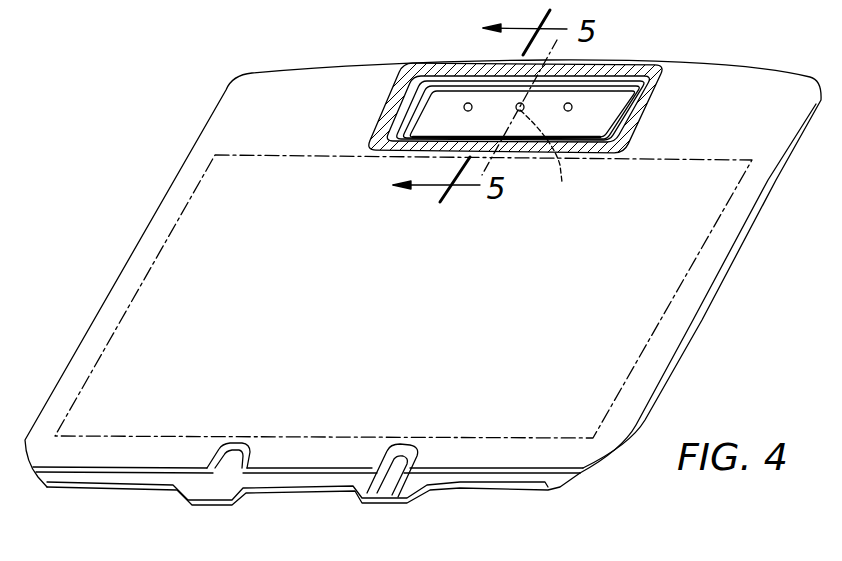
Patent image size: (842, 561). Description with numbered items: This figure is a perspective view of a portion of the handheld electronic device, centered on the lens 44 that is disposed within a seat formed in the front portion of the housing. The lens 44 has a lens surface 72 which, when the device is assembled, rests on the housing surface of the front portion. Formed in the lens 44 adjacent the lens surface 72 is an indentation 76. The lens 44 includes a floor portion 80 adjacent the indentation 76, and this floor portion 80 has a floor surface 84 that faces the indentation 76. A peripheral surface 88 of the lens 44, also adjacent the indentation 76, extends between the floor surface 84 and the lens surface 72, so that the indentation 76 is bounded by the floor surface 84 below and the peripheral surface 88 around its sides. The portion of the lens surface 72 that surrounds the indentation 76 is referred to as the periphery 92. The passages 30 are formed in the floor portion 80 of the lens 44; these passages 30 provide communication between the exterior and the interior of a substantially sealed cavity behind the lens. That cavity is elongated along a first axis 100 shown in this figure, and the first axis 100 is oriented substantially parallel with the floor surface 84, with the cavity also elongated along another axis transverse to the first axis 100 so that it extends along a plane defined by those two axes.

The passages 30 is at (517, 106).
The lens 44 is at (717, 65).
The lens surface 72 is at (779, 87).
The indentation 76 is at (567, 82).
The floor portion 80 is at (442, 90).
The floor surface 84 is at (425, 118).
The peripheral surface 88 is at (413, 92).
The periphery 92 is at (365, 141).
The first axis 100 is at (552, 158).